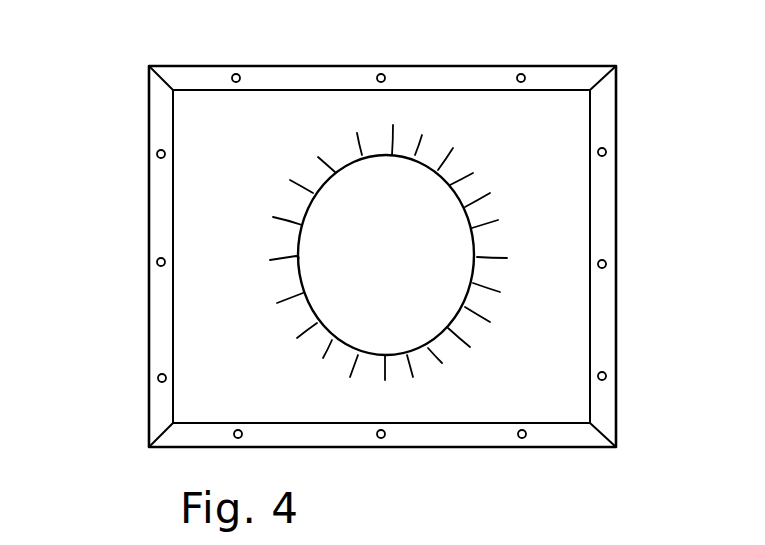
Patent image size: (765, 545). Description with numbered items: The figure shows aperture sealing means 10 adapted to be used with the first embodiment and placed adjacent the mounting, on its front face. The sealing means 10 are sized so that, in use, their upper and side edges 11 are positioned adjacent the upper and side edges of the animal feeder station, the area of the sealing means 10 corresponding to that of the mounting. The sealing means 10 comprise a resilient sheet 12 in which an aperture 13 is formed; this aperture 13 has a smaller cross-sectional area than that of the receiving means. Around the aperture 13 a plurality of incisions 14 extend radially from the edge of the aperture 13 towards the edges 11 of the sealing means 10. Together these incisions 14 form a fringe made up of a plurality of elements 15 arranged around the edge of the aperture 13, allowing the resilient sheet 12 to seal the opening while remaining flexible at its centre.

The aperture sealing means 10 is at (150, 323).
The upper and side edges 11 is at (303, 76).
The resilient sheet 12 is at (557, 233).
The aperture 13 is at (393, 238).
The incisions 14 is at (500, 223).
The fringe elements 15 is at (345, 360).